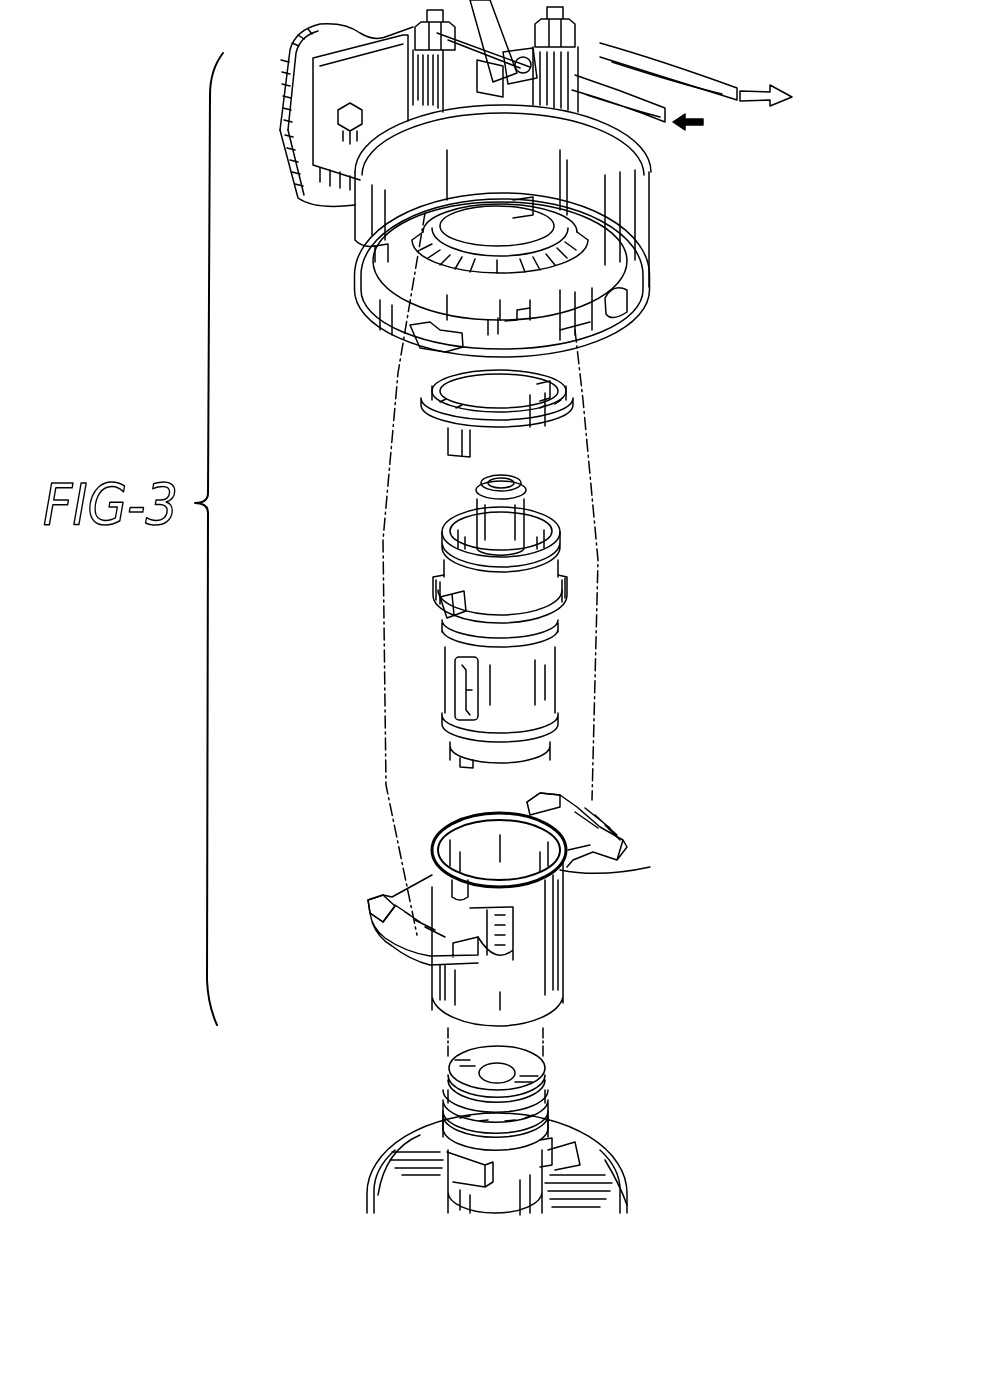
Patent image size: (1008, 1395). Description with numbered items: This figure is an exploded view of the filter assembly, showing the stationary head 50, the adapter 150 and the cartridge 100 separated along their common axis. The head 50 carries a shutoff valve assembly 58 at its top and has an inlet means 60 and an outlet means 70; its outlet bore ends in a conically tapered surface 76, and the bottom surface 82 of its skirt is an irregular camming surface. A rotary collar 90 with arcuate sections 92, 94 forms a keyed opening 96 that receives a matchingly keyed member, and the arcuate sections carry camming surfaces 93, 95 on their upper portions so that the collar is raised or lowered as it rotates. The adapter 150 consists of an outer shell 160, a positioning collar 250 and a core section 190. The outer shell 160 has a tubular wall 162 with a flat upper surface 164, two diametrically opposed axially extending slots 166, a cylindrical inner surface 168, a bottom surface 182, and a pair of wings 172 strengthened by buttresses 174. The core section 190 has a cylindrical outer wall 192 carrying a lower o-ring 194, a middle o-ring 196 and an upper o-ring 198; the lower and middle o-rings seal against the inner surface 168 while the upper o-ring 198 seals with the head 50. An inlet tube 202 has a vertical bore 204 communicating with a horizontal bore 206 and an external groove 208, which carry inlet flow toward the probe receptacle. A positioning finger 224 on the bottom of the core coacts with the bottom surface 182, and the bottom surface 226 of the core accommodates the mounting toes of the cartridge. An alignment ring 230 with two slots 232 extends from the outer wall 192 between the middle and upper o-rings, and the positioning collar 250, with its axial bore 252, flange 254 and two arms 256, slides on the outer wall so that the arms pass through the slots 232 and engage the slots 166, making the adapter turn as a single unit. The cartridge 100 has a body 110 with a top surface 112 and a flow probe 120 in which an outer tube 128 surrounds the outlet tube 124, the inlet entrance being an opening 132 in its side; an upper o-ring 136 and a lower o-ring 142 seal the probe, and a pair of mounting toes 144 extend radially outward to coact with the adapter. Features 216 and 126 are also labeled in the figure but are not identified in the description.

The head 50 is at (316, 282).
The shutoff valve assembly 58 is at (467, 3).
The inlet means 60 is at (388, 40).
The outlet means 70 is at (542, 20).
The conically tapered surface 76 is at (583, 222).
The bottom surface of head skirt 82 is at (576, 338).
The rotary collar 90 is at (651, 258).
The arcuate section 92 is at (641, 297).
The camming surface 93 is at (598, 326).
The arcuate section 94 is at (378, 319).
The camming surface 95 is at (430, 325).
The keyed opening 96 is at (488, 340).
The positioning collar 250 is at (416, 427).
The axial bore 252 is at (570, 392).
The flange 254 is at (567, 425).
The arms 256 is at (472, 448).
The core section 190 is at (415, 638).
The vertical bore 204 is at (490, 480).
The inlet tube 202 is at (547, 520).
The recess 216 is at (465, 523).
The upper o-ring 198 is at (565, 550).
The alignment ring 230 is at (434, 583).
The slots 232 is at (440, 598).
The middle o-ring 196 is at (558, 622).
The outer wall 192 is at (556, 667).
The horizontal bore 206 is at (460, 681).
The external groove 208 is at (458, 708).
The lower o-ring 194 is at (560, 713).
The bottom surface of core 226 is at (537, 762).
The positioning finger 224 is at (467, 766).
The adapter 150 is at (672, 838).
The outer shell 160 is at (572, 956).
The flat upper surface 164 is at (440, 840).
The axially extending slots 166 is at (472, 806).
The cylindrical inner surface 168 is at (568, 872).
The wings 172 is at (400, 893).
The buttresses 174 is at (512, 928).
The tubular wall 162 is at (445, 992).
The bottom surface of outer shell 182 is at (560, 1003).
The cartridge 100 is at (632, 1153).
The flow probe 120 is at (556, 1067).
The outlet tube 124 is at (490, 1062).
The upper o-ring 136 is at (547, 1087).
The upper ring 126 is at (457, 1077).
The opening 132 is at (492, 1120).
The outer tube 128 is at (488, 1120).
The mounting toes 144 is at (463, 1178).
The top surface of cartridge body 112 is at (385, 1175).
The lower o-ring 142 is at (574, 1173).
The body 110 is at (630, 1198).